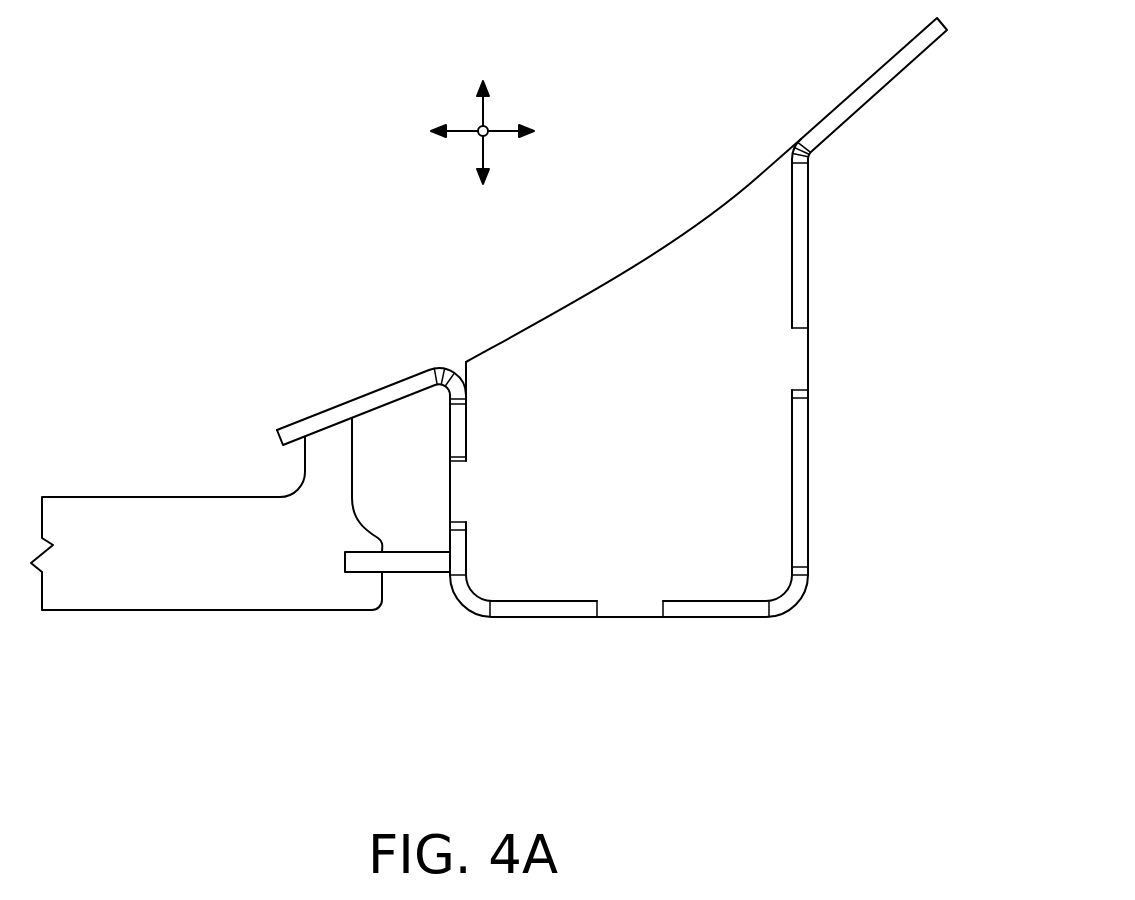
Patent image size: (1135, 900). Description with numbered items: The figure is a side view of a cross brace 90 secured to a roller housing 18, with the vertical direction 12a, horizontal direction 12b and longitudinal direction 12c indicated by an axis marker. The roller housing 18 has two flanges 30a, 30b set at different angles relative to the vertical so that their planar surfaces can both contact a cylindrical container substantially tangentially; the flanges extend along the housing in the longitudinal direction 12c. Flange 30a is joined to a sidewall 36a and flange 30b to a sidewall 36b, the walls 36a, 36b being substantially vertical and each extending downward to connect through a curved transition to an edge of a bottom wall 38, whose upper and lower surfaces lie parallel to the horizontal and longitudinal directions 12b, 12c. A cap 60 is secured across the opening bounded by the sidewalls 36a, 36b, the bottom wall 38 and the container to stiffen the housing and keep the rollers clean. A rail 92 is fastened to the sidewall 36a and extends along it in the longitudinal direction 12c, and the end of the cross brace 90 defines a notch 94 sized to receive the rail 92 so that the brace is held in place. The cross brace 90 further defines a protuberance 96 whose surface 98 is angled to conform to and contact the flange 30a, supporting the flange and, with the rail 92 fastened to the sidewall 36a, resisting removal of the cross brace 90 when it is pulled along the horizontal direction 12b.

The vertical direction 12a is at (481, 117).
The horizontal direction 12b is at (505, 128).
The longitudinal direction 12c is at (488, 135).
The roller housing 18 is at (461, 275).
The flange 30a is at (360, 408).
The flange 30b is at (884, 77).
The sidewall 36a is at (455, 543).
The sidewall 36b is at (798, 472).
The bottom wall 38 is at (552, 608).
The cap 60 is at (621, 391).
The cross brace 90 is at (200, 564).
The rail 92 is at (405, 563).
The notch 94 is at (360, 573).
The protuberance 96 is at (322, 462).
The surface 98 is at (337, 424).